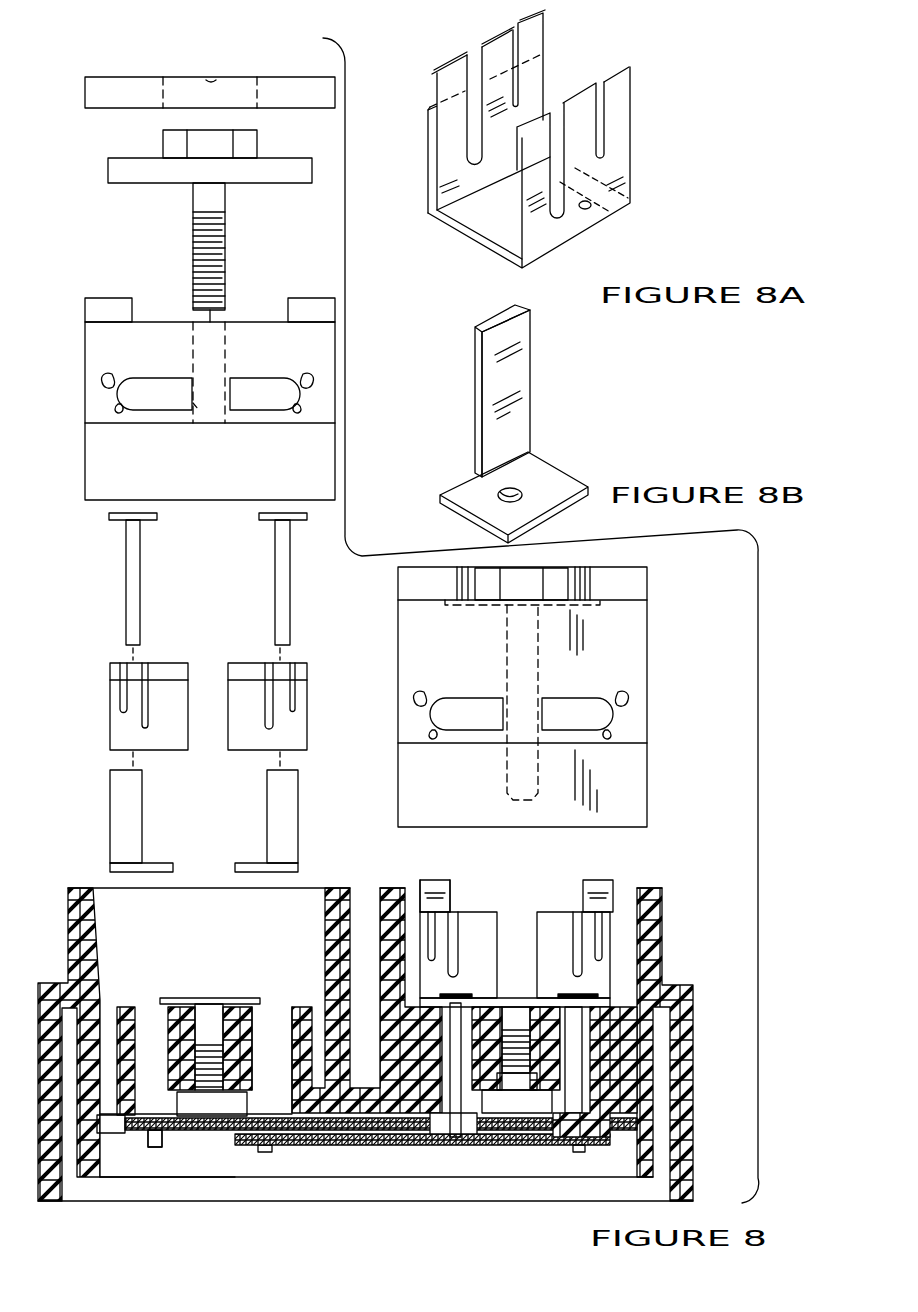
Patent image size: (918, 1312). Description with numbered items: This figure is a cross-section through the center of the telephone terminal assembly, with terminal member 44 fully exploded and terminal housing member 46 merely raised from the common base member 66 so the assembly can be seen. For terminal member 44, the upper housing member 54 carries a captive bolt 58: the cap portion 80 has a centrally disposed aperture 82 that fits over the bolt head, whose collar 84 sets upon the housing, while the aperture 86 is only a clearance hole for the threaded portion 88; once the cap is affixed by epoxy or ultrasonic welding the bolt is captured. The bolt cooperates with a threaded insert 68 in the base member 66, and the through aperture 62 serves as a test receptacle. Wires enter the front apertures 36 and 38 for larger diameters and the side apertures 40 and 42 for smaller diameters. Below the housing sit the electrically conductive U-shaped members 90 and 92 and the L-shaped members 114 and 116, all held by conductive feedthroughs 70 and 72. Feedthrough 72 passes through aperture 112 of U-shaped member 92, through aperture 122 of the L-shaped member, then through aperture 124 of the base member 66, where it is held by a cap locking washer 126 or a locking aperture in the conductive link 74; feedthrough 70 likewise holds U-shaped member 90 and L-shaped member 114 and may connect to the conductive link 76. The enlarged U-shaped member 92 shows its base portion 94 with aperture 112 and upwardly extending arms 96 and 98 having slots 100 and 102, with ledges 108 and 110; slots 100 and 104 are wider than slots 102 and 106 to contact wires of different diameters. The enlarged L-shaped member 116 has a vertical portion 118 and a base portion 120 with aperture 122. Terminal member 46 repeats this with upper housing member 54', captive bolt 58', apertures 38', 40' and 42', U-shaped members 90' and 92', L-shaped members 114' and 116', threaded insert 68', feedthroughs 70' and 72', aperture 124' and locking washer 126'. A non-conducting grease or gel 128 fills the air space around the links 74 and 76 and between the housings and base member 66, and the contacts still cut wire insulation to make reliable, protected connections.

In FIG. 8, the cap portion 80 is at (113, 92).
In FIG. 8, the centrally disposed aperture 82 is at (215, 78).
In FIG. 8, the captive bolt 58 is at (161, 141).
In FIG. 8, the collar 84 is at (278, 172).
In FIG. 8, the threaded portion 88 is at (210, 252).
In FIG. 8, the threaded insert 68 is at (166, 746).
In FIG. 8, the through aperture 62 is at (298, 308).
In FIG. 8, the upper housing member 54 is at (185, 411).
In FIG. 8, the terminal member 44 is at (98, 393).
In FIG. 8, the aperture 42 is at (121, 358).
In FIG. 8, the aperture 40 is at (285, 358).
In FIG. 8, the aperture 38 is at (104, 428).
In FIG. 8, the aperture 36 is at (296, 410).
In FIG. 8, the aperture 86 is at (199, 410).
In FIG. 8, the electrically conductive feedthrough 70 is at (146, 579).
In FIG. 8, the electrically conductive feedthrough 72 is at (227, 875).
In FIG. 8, the U-shaped member 90 is at (149, 695).
In FIG. 8, the U-shaped member 92 is at (267, 695).
In FIG. 8A, the U-shaped member 92 is at (393, 143).
In FIG. 8, the L-shaped member 114 is at (152, 821).
In FIG. 8, the vertical portion 118 is at (268, 790).
In FIG. 8B, the vertical portion 118 is at (513, 372).
In FIG. 8, the L-shaped member 116 is at (243, 841).
In FIG. 8B, the L-shaped member 116 is at (456, 391).
In FIG. 8, the terminal housing member 46 is at (628, 667).
In FIG. 8, the upper housing member 54' is at (545, 704).
In FIG. 8, the captive bolt 58' is at (529, 570).
In FIG. 8, the aperture 40' is at (432, 674).
In FIG. 8, the aperture 42' is at (601, 679).
In FIG. 8, the aperture 38' is at (617, 757).
In FIG. 8, the common base member 66 is at (665, 975).
In FIG. 8, the non-conducting grease or gel 128 is at (125, 1165).
In FIG. 8, the electrically conductive link 74 is at (356, 1143).
In FIG. 8, the cap locking washer 126 is at (353, 1100).
In FIG. 8, the electrically conductive link 76 is at (175, 1128).
In FIG. 8, the aperture 124 is at (271, 1038).
In FIG. 8, the U-shaped member 92' is at (470, 927).
In FIG. 8, the U-shaped member 90' is at (630, 948).
In FIG. 8, the L-shaped member 116' is at (451, 877).
In FIG. 8, the L-shaped member 114' is at (644, 881).
In FIG. 8, the threaded insert 68' is at (515, 1115).
In FIG. 8, the electrically conductive feedthrough 72' is at (436, 1120).
In FIG. 8, the electrically conductive feedthrough 70' is at (656, 1062).
In FIG. 8, the locking washer 126' is at (553, 1122).
In FIG. 8, the aperture 124' is at (676, 1048).
In FIG. 8A, the slot 104 is at (478, 63).
In FIG. 8A, the slot 106 is at (518, 40).
In FIG. 8A, the ledge 108 is at (422, 106).
In FIG. 8A, the arm 96 is at (428, 137).
In FIG. 8A, the base portion 94 is at (473, 212).
In FIG. 8A, the arm 98 is at (528, 243).
In FIG. 8A, the slot 100 is at (573, 223).
In FIG. 8A, the slot 102 is at (597, 158).
In FIG. 8A, the ledge 110 is at (632, 105).
In FIG. 8A, the aperture 112 is at (595, 207).
In FIG. 8B, the base portion 120 is at (553, 480).
In FIG. 8B, the aperture 122 is at (512, 503).